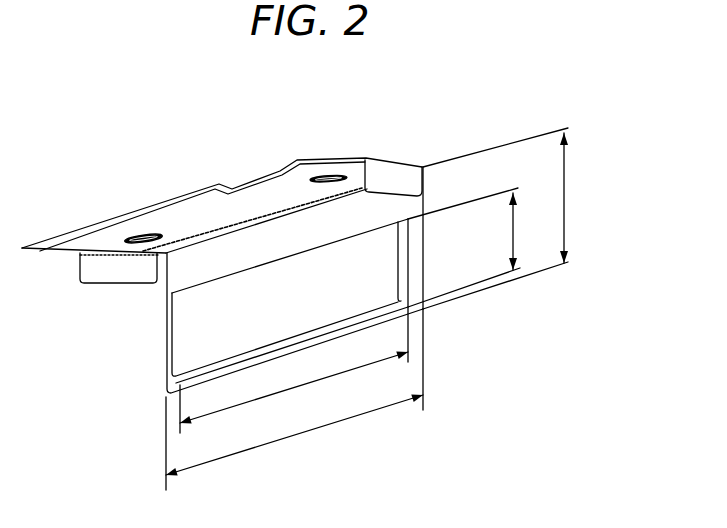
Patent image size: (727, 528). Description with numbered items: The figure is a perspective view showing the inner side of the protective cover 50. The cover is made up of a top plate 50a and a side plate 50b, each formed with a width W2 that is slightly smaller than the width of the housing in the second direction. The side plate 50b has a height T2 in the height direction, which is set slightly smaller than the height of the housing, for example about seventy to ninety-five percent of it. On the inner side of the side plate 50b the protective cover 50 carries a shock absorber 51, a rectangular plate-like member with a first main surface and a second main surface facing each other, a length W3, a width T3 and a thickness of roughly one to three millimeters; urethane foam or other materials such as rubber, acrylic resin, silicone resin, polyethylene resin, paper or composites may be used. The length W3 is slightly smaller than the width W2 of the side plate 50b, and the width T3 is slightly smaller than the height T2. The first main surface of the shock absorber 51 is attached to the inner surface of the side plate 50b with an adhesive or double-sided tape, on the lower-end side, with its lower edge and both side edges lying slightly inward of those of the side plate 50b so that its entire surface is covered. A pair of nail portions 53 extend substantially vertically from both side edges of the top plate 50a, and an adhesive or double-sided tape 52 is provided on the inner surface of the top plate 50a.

The protective cover 50 is at (263, 235).
The top plate 50a is at (253, 175).
The side plate 50b is at (410, 207).
The shock absorber 51 is at (380, 270).
The adhesive or double-sided tape 52 is at (298, 177).
The nail portions 53 is at (107, 274).
The height of the side plate T2 is at (510, 218).
The width of the shock absorber T3 is at (476, 247).
The width of the top plate and side plate W2 is at (294, 399).
The length of the shock absorber W3 is at (294, 393).